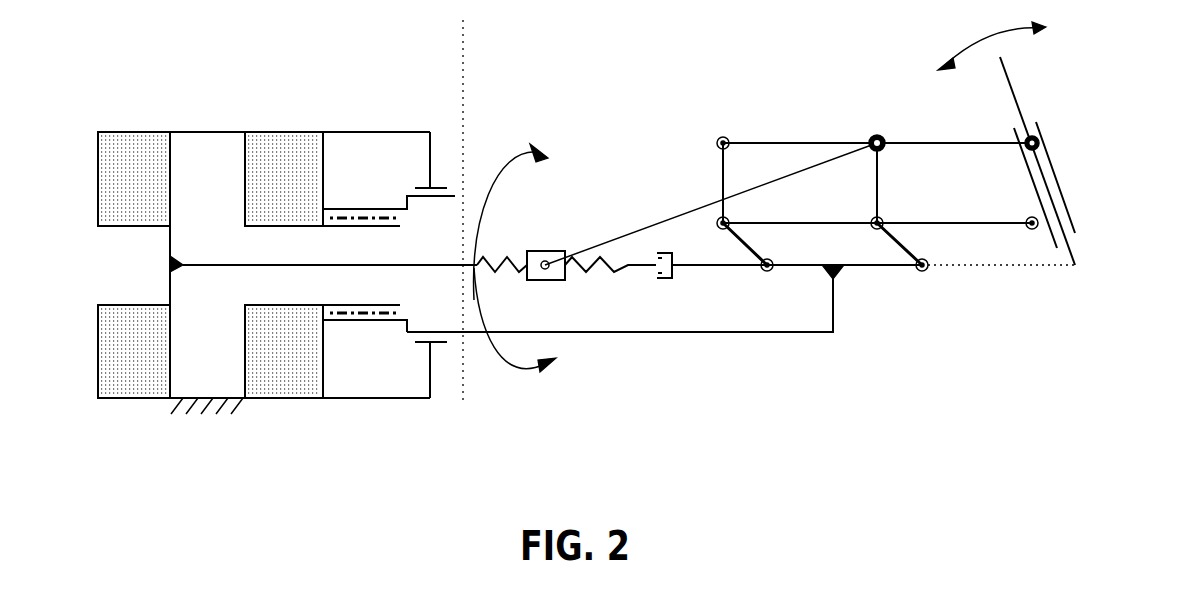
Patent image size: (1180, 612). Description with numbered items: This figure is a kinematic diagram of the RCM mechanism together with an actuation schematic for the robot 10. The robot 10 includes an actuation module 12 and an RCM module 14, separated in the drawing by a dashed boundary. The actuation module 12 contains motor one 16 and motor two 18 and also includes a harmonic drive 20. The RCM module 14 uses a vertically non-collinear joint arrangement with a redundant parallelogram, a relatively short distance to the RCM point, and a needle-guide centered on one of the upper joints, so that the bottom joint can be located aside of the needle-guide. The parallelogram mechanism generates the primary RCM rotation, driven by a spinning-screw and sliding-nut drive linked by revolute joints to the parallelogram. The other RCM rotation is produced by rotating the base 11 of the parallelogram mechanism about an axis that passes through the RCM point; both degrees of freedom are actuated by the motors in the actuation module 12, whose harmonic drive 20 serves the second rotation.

The robot 10 is at (588, 358).
The base 11 is at (725, 310).
The actuation module 12 is at (278, 112).
The RCM module 14 is at (655, 154).
The motor1 16 is at (118, 378).
The motor2 18 is at (283, 378).
The harmonic drive 20 is at (385, 322).